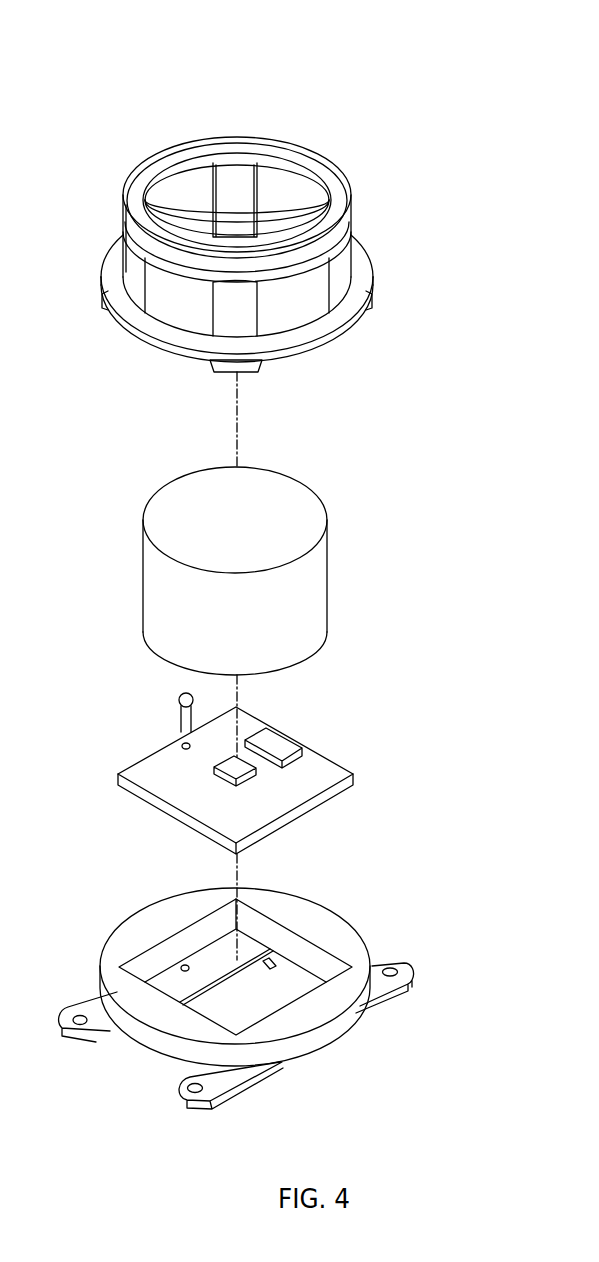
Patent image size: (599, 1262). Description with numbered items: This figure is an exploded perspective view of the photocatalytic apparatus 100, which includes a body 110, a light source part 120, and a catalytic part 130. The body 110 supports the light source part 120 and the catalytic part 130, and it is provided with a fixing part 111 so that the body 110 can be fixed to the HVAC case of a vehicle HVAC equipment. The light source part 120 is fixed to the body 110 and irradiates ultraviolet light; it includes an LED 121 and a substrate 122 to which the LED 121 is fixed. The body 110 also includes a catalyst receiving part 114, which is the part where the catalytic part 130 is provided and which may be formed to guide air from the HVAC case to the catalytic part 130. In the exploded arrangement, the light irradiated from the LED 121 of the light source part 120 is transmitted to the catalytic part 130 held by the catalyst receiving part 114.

The photocatalytic apparatus 100 is at (82, 102).
The body 110 is at (350, 918).
The fixing part 111 is at (412, 968).
The catalyst receiving part 114 is at (373, 270).
The light source part 120 is at (453, 737).
The LED 121 is at (243, 762).
The substrate 122 is at (353, 774).
The catalytic part 130 is at (328, 584).